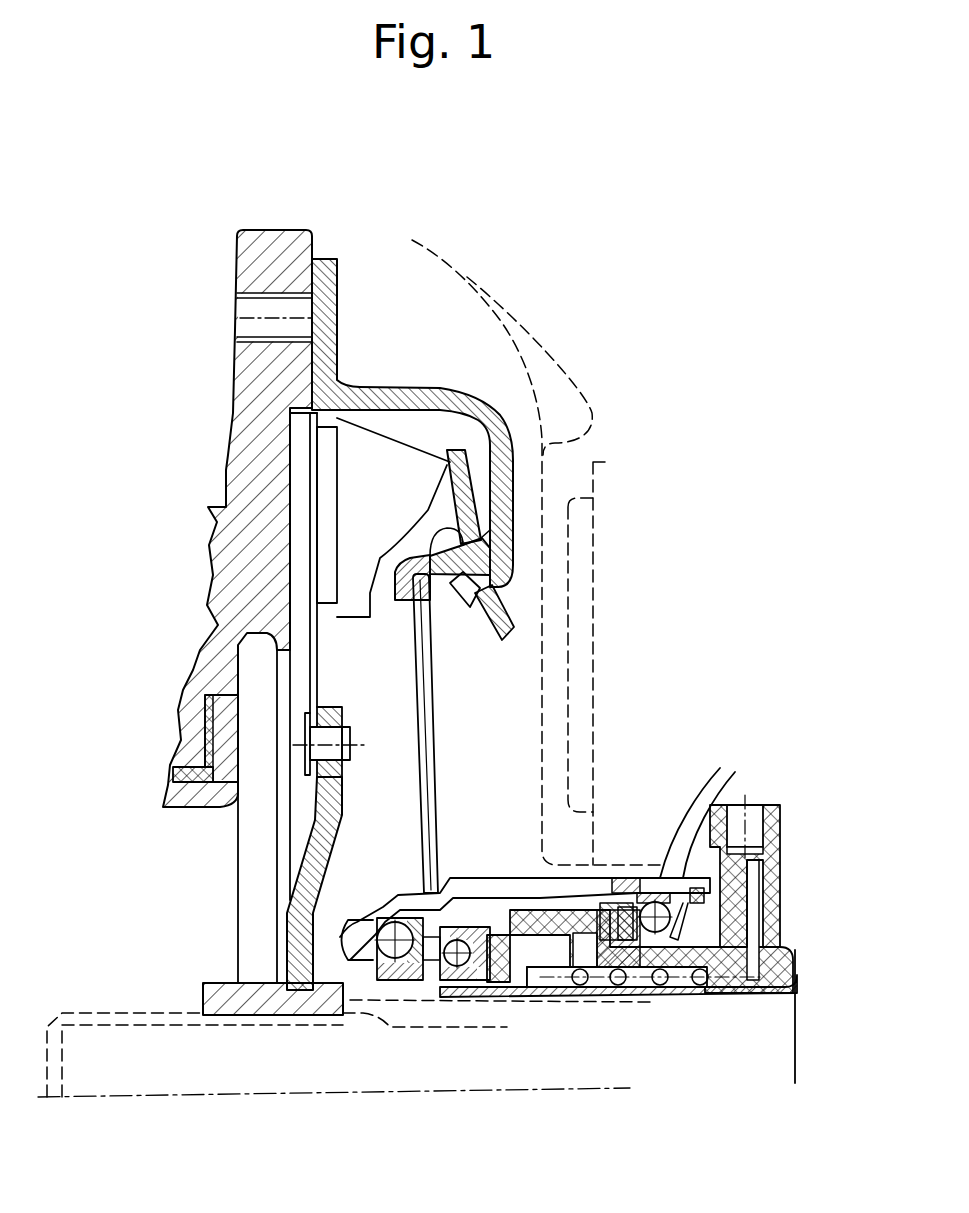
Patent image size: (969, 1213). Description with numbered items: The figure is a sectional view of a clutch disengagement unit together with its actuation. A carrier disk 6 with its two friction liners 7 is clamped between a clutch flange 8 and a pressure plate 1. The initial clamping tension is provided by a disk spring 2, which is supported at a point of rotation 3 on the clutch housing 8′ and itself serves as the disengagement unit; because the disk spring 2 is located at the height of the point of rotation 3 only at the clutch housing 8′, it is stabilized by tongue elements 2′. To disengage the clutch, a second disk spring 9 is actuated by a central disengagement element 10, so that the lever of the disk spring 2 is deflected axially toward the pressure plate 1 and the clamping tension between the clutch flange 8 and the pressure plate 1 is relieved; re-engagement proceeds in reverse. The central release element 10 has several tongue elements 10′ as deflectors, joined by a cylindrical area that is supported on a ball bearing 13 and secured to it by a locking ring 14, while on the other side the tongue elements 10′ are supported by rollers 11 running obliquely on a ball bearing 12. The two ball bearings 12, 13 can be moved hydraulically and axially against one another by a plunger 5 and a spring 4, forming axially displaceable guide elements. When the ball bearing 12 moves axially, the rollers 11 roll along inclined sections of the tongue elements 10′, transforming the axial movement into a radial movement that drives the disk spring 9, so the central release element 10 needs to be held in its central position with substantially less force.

The pressure plate 1 is at (368, 473).
The disk spring 2 is at (463, 468).
The tongue elements 2′ is at (504, 625).
The point of rotation 3 is at (487, 567).
The spring 4 is at (687, 993).
The plunger 5 is at (588, 995).
The carrier disk 6 is at (312, 518).
The friction liners 7 is at (327, 463).
The clutch flange 8 is at (271, 264).
The clutch housing 8′ is at (465, 400).
The disk spring 9 is at (424, 700).
The central disengagement element 10 is at (495, 1038).
The tongue elements 10′ is at (428, 903).
The rollers 11 is at (408, 947).
The ball bearing 12 is at (460, 950).
The ball bearing 13 is at (665, 845).
The locking ring 14 is at (697, 895).